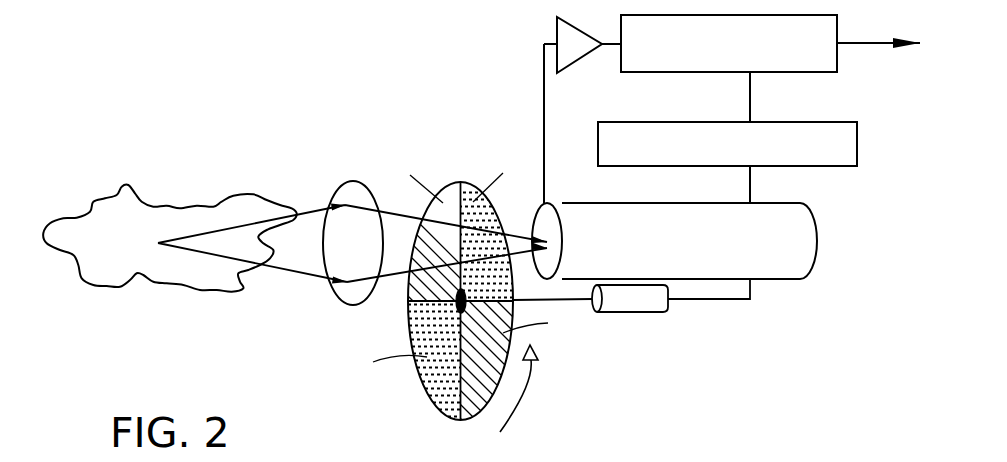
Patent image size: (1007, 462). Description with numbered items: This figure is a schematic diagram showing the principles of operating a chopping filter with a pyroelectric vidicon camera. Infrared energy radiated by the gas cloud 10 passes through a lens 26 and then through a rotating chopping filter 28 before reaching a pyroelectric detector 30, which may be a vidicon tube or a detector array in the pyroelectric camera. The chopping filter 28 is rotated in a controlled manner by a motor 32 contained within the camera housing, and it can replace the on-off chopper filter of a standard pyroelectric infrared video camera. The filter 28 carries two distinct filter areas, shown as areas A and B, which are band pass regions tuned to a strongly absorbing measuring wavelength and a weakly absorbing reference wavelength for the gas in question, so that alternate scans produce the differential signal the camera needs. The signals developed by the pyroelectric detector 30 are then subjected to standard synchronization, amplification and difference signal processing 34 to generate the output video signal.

The gas cloud 10 is at (160, 213).
The lens 26 is at (345, 182).
The rotating chopping filter 28 is at (450, 183).
The pyroelectric detector 30 is at (795, 223).
The motor 32 is at (628, 303).
The synchronization, amplification and difference signal processing 34 is at (867, 122).